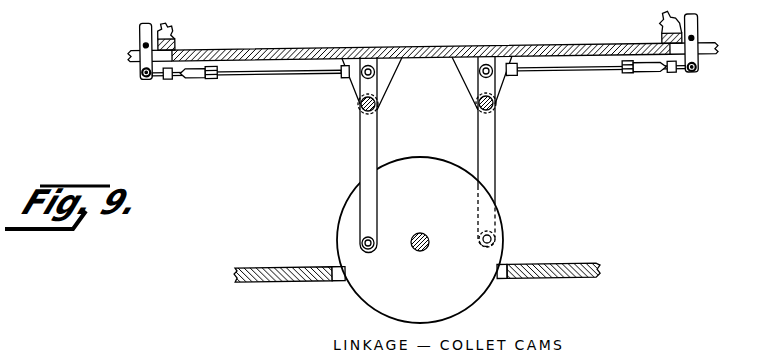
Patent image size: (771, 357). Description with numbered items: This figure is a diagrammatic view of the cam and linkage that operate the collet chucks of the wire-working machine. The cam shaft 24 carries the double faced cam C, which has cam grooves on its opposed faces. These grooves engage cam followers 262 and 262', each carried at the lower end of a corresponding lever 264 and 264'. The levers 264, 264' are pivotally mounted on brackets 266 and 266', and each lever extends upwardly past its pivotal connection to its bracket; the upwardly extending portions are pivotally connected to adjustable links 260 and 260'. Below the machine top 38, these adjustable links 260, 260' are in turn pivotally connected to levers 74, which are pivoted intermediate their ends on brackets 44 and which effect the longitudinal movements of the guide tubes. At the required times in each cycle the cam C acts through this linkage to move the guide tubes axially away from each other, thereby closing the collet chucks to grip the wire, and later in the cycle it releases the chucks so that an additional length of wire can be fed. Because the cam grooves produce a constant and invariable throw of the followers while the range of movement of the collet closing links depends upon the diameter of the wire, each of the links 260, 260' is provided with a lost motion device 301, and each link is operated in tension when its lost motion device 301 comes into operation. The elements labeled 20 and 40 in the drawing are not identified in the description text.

The support plate 20 is at (587, 264).
The cam shaft 24 is at (420, 232).
The machine top 38 is at (402, 46).
The frame 40 is at (61, 348).
The bracket 44 is at (672, 0).
The lever 74 is at (139, 33).
The adjustable link 260 is at (246, 90).
The adjustable link 260' is at (601, 85).
The cam follower 262 is at (333, 248).
The cam follower 262' is at (514, 222).
The lever 264 is at (344, 155).
The lever 264' is at (512, 152).
The bracket 266 is at (338, 85).
The bracket 266' is at (517, 83).
The lost motion device 301 is at (194, 81).
The cam C is at (503, 248).